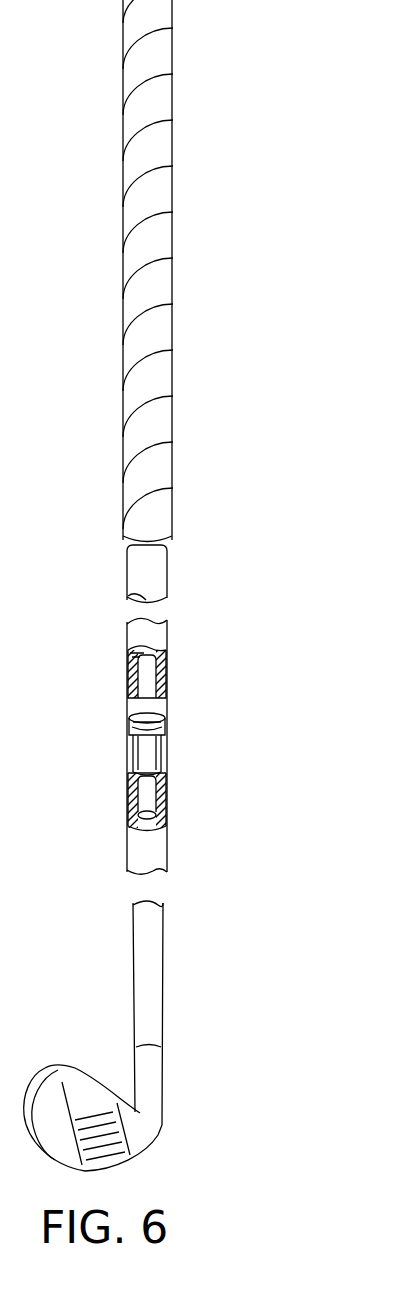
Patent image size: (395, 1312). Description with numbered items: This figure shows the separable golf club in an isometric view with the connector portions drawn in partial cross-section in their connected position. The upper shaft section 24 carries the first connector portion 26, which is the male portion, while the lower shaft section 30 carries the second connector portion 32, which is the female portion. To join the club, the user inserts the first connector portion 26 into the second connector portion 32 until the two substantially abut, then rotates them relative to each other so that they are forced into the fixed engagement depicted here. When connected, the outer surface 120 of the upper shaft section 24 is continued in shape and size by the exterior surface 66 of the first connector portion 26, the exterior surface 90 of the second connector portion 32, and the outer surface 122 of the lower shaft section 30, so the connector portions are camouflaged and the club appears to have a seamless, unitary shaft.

The upper shaft section 24 is at (162, 573).
The outer surface of the upper shaft section 120 is at (167, 637).
The first connector portion 26 is at (167, 675).
The exterior surface of the first connector portion 66 is at (167, 712).
The exterior surface of the second connector portion 90 is at (167, 754).
The second connector portion 32 is at (167, 797).
The outer surface of the lower shaft section 122 is at (167, 852).
The lower shaft section 30 is at (155, 968).